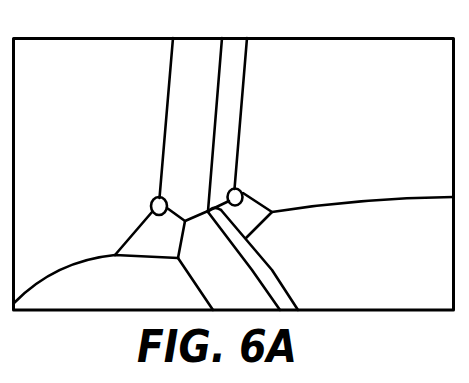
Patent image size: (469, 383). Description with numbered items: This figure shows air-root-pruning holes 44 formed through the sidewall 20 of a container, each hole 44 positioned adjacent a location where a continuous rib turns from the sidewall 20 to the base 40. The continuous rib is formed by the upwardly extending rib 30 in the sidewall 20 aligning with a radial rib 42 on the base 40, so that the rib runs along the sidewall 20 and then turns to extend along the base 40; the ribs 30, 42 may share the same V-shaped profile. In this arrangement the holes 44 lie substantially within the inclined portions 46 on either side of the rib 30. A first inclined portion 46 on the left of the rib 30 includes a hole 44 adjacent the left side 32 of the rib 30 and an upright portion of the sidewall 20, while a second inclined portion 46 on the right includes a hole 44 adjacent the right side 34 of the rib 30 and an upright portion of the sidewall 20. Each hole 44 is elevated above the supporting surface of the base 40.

The sidewall 20 is at (428, 82).
The upwardly extending rib 30 is at (234, 50).
The left side of the rib 32 is at (171, 103).
The right side of the rib 34 is at (233, 104).
The base 40 is at (432, 293).
The radial rib 42 is at (274, 283).
The air-root-pruning hole 44 is at (152, 197).
The inclined portion 46 is at (134, 227).